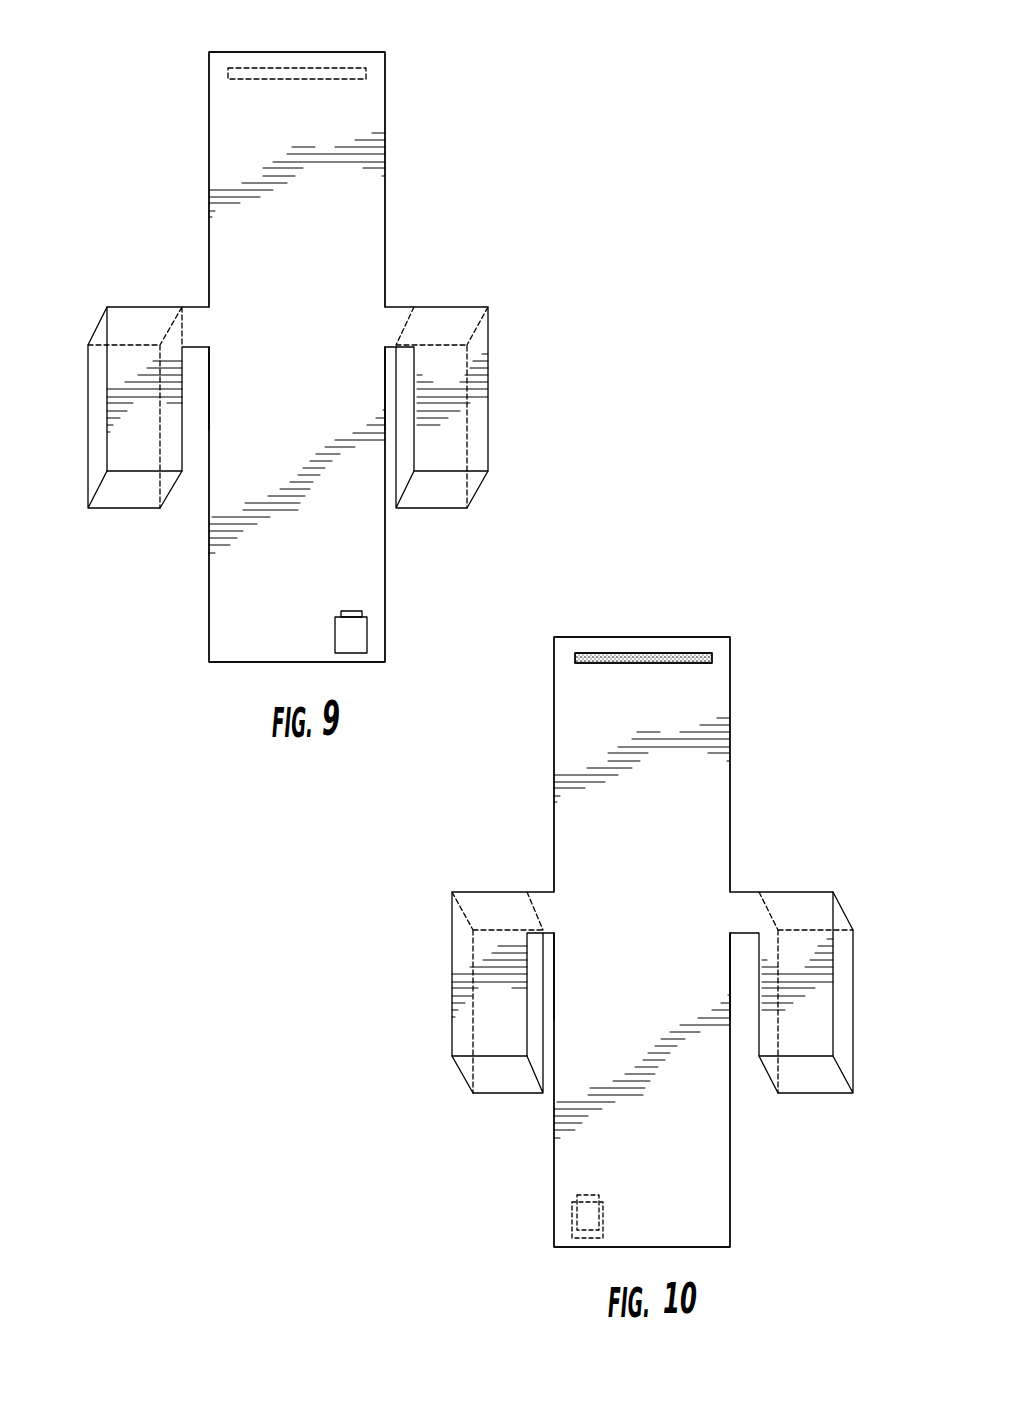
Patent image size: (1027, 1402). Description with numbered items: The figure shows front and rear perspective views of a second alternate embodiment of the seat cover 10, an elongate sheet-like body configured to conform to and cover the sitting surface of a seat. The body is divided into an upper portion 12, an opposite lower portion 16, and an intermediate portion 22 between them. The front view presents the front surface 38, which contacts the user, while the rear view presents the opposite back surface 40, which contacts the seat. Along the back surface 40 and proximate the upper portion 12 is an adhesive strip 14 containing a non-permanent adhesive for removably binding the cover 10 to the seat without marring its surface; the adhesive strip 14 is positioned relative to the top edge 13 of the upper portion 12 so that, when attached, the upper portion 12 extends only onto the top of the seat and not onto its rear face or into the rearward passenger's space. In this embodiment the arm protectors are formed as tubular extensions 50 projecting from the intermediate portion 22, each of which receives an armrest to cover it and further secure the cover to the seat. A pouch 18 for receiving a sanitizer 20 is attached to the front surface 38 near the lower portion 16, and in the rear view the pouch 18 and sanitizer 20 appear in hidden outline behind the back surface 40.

In FIG. 9, the seat cover 10 is at (120, 100).
In FIG. 10, the seat cover 10 is at (815, 610).
In FIG. 9, the upper portion 12 is at (367, 95).
In FIG. 10, the upper portion 12 is at (710, 681).
In FIG. 9, the top edge 13 is at (281, 52).
In FIG. 10, the top edge 13 is at (625, 637).
In FIG. 10, the adhesive strip 14 is at (672, 655).
In FIG. 9, the lower portion 16 is at (228, 637).
In FIG. 10, the lower portion 16 is at (692, 1200).
In FIG. 9, the pouch 18 is at (352, 631).
In FIG. 10, the pouch 18 is at (572, 1218).
In FIG. 9, the sanitizer 20 is at (348, 611).
In FIG. 10, the sanitizer 20 is at (585, 1196).
In FIG. 9, the intermediate portion 22 is at (282, 355).
In FIG. 9, the front surface 38 is at (268, 448).
In FIG. 10, the back surface 40 is at (642, 922).
In FIG. 9, the tubular extensions 50 is at (115, 495).
In FIG. 10, the tubular extensions 50 is at (495, 1078).